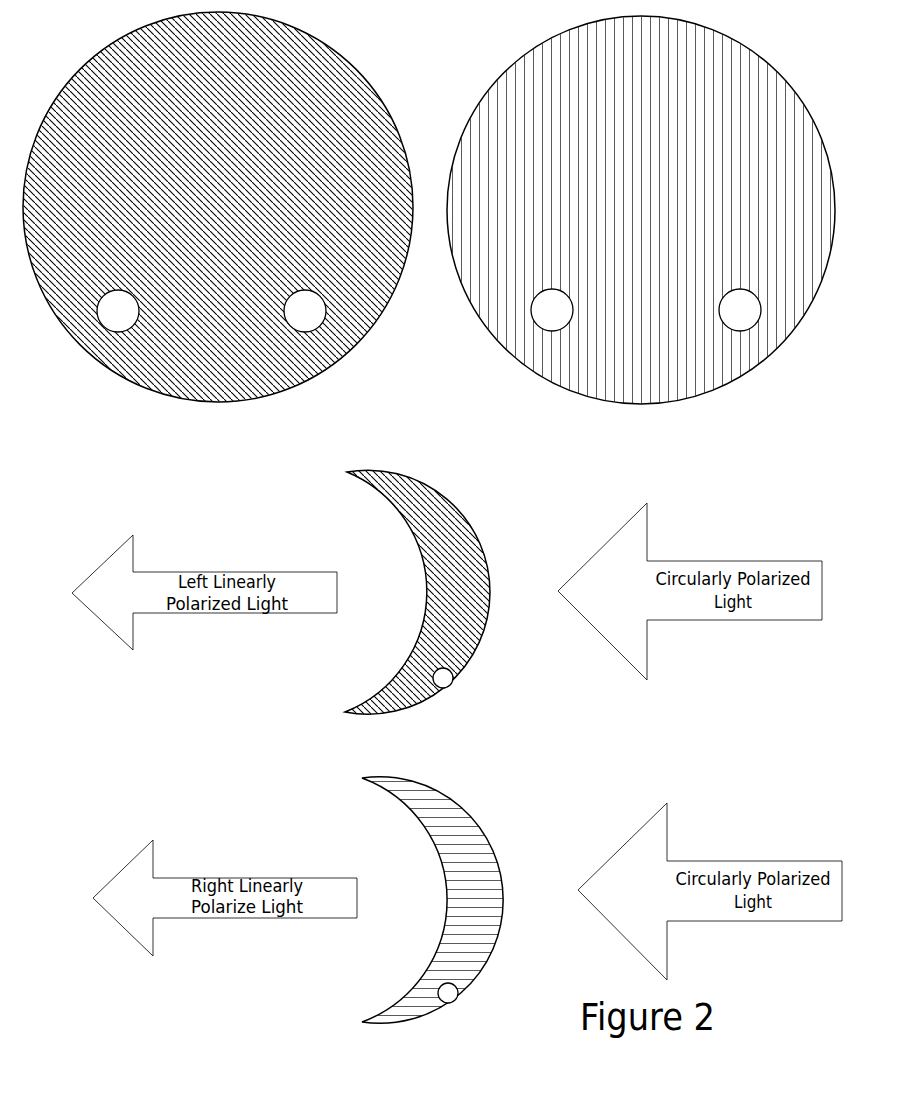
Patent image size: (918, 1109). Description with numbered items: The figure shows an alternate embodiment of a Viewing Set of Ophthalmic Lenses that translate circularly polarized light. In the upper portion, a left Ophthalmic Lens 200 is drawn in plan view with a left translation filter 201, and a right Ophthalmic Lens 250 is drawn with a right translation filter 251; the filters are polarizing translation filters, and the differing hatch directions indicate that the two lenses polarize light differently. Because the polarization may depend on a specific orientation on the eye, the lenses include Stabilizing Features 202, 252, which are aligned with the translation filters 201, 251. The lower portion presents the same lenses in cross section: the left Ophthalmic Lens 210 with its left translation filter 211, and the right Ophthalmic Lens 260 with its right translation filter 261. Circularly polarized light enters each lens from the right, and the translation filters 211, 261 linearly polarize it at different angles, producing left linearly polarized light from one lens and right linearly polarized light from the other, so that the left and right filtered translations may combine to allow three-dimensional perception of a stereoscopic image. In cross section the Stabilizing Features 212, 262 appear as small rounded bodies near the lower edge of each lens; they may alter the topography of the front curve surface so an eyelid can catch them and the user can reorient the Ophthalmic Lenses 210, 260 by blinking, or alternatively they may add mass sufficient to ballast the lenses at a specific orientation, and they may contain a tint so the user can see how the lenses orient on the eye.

The left Ophthalmic Lens 200 is at (218, 226).
The left translation filter 201 is at (345, 100).
The Stabilizing Feature 202 is at (310, 317).
The right Ophthalmic Lens 250 is at (641, 228).
The right translation filter 251 is at (738, 100).
The Stabilizing Feature 252 is at (740, 313).
The left Ophthalmic Lens 210 is at (385, 592).
The left translation filter 211 is at (450, 557).
The Stabilizing Feature 212 is at (445, 692).
The right Ophthalmic Lens 260 is at (395, 900).
The right translation filter 261 is at (467, 850).
The Stabilizing Feature 262 is at (448, 995).